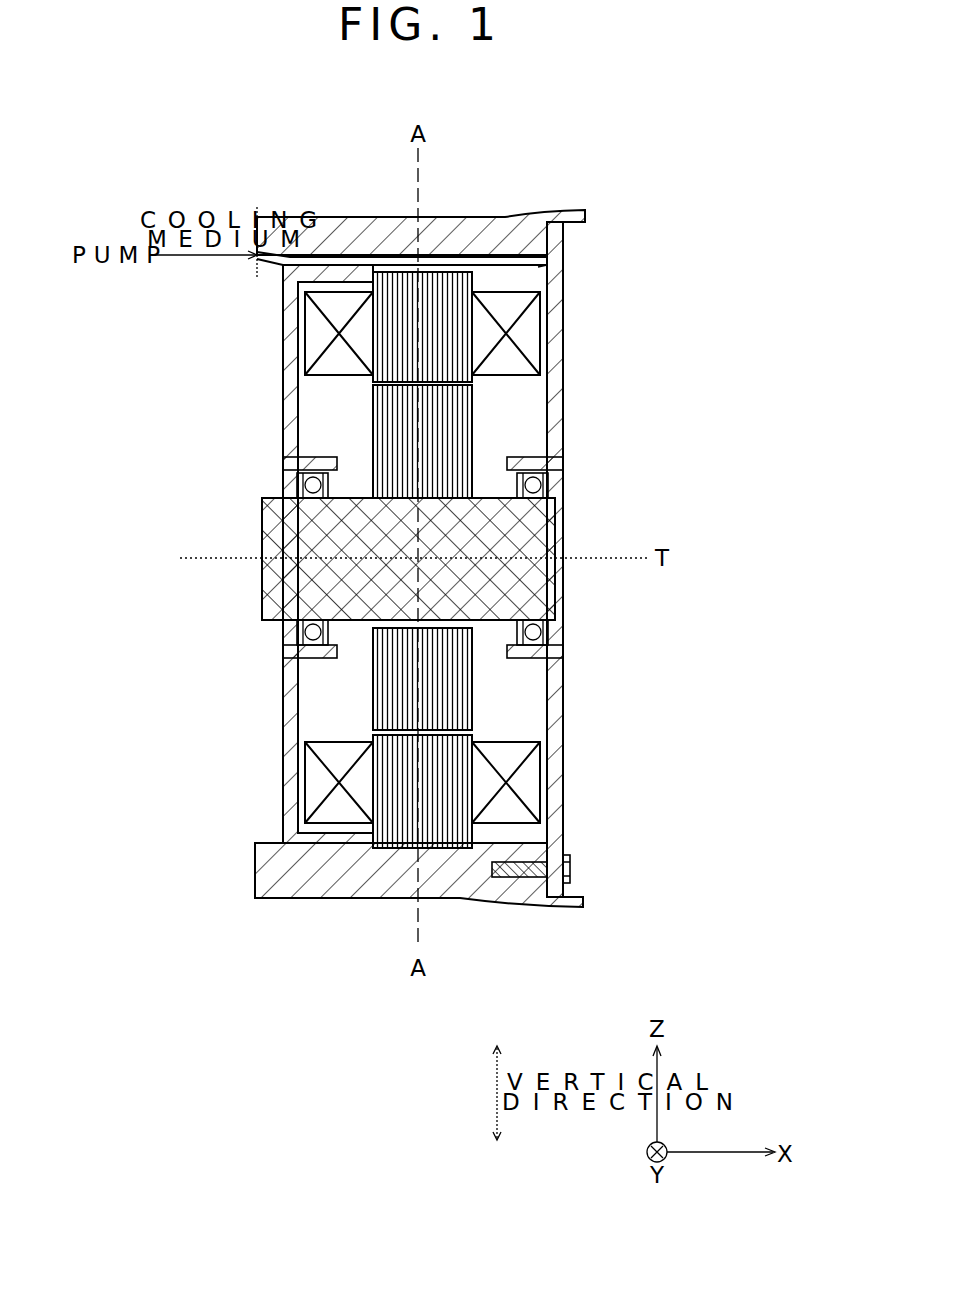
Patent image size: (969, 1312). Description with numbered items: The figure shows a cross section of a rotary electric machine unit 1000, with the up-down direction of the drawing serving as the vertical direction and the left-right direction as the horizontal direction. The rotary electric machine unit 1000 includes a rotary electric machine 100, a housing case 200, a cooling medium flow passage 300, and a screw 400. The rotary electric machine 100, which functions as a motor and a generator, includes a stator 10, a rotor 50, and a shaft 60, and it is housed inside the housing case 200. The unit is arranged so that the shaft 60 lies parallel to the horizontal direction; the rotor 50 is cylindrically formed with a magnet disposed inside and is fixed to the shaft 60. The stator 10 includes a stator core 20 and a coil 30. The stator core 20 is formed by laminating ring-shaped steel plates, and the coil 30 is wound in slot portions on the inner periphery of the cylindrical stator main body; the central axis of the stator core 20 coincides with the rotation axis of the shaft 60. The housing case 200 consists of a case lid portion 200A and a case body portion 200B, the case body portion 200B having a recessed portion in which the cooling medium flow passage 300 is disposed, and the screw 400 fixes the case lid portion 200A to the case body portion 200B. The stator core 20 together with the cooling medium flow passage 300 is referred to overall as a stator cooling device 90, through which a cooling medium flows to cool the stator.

The rotary electric machine unit 1000 is at (435, 512).
The rotary electric machine 100 is at (370, 556).
The stator 10 is at (415, 556).
The stator core 20 is at (383, 313).
The coil 30 is at (312, 345).
The rotor 50 is at (375, 412).
The shaft 60 is at (345, 538).
The housing case 200 is at (509, 528).
The case lid portion 200A is at (565, 358).
The case body portion 200B is at (330, 217).
The cooling medium flow passage 300 is at (546, 258).
The stator cooling device 90 is at (513, 274).
The screw 400 is at (570, 868).